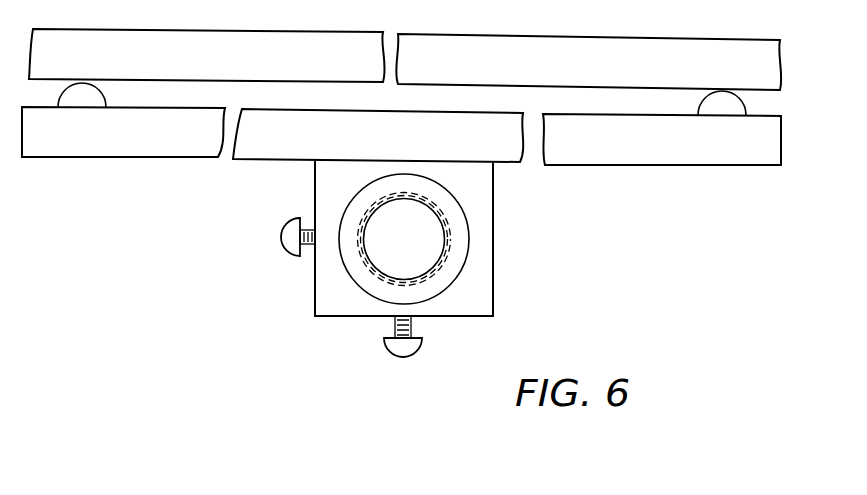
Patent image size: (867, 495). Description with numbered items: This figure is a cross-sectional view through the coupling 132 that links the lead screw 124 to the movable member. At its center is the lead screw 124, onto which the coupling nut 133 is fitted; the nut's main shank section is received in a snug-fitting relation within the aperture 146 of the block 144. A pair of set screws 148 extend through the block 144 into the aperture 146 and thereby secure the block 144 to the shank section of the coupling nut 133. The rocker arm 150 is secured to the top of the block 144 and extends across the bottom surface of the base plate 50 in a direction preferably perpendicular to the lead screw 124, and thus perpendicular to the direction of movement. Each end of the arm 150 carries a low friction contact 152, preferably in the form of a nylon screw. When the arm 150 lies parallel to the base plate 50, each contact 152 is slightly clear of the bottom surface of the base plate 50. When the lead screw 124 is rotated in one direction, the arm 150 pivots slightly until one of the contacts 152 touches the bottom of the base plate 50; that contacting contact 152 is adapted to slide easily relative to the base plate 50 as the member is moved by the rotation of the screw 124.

The base plate 50 is at (546, 11).
The rocker arm 150 is at (692, 160).
The low friction contact 152 is at (104, 92).
The coupling 132 is at (395, 266).
The block 144 is at (497, 270).
The aperture 146 is at (353, 262).
The coupling nut 133 is at (462, 247).
The lead screw 124 is at (433, 237).
The set screws 148 is at (282, 249).